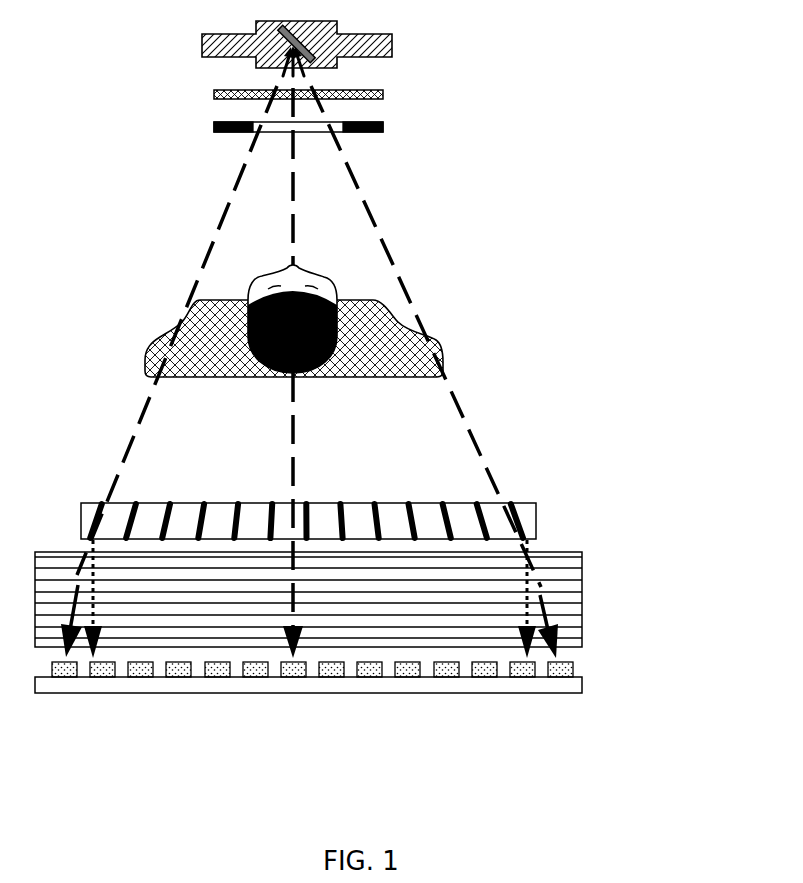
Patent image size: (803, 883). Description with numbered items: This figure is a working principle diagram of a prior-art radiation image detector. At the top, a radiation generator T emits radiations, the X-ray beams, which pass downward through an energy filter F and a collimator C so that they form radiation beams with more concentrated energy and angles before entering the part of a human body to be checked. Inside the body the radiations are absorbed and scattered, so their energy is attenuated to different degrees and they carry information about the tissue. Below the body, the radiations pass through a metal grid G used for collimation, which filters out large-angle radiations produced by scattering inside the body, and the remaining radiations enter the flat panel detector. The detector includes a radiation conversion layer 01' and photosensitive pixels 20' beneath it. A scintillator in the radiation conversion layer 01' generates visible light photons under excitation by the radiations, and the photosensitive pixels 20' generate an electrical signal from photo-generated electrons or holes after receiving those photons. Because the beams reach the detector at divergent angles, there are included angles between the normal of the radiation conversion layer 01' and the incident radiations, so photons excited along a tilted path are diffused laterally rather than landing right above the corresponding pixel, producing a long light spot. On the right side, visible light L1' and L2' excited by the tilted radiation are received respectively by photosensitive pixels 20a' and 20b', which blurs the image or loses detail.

The radiation generator T is at (392, 43).
The energy filter F is at (383, 94).
The collimator C is at (383, 127).
The X-rays X-ray is at (400, 277).
The metal grid G is at (536, 515).
The radiation conversion layer 01' is at (347, 599).
The visible light L1' is at (361, 599).
The visible light L2' is at (349, 621).
The photosensitive pixel 20a' is at (504, 703).
The photosensitive pixel 20b' is at (562, 703).
The photosensitive pixels 20' is at (527, 719).